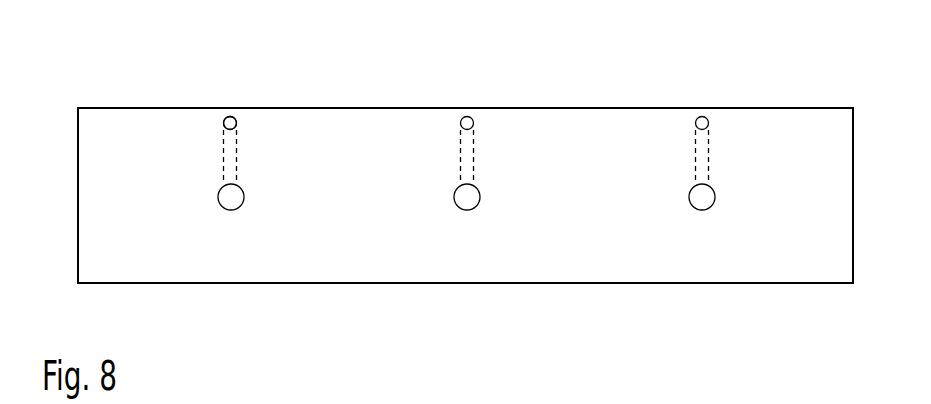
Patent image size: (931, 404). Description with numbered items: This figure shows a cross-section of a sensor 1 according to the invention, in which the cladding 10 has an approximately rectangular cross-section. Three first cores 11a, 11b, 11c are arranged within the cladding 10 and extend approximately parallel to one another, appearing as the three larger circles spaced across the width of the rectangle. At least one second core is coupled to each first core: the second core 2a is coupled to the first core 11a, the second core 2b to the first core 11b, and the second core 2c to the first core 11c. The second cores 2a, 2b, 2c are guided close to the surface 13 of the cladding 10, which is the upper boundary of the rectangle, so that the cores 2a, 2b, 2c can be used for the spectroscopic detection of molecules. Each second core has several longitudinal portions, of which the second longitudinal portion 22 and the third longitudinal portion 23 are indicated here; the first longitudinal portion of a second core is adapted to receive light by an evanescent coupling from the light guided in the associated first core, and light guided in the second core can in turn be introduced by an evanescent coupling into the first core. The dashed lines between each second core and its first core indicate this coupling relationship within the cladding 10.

The sensor 1 is at (596, 87).
The cladding 10 is at (617, 272).
The surface 13 is at (364, 107).
The second core 2a is at (234, 118).
The second core 2b is at (471, 118).
The second core 2c is at (706, 118).
The third longitudinal portion 23 is at (224, 126).
The second longitudinal portion 22 is at (224, 168).
The first core 11a is at (235, 200).
The first core 11b is at (470, 200).
The first core 11c is at (706, 200).